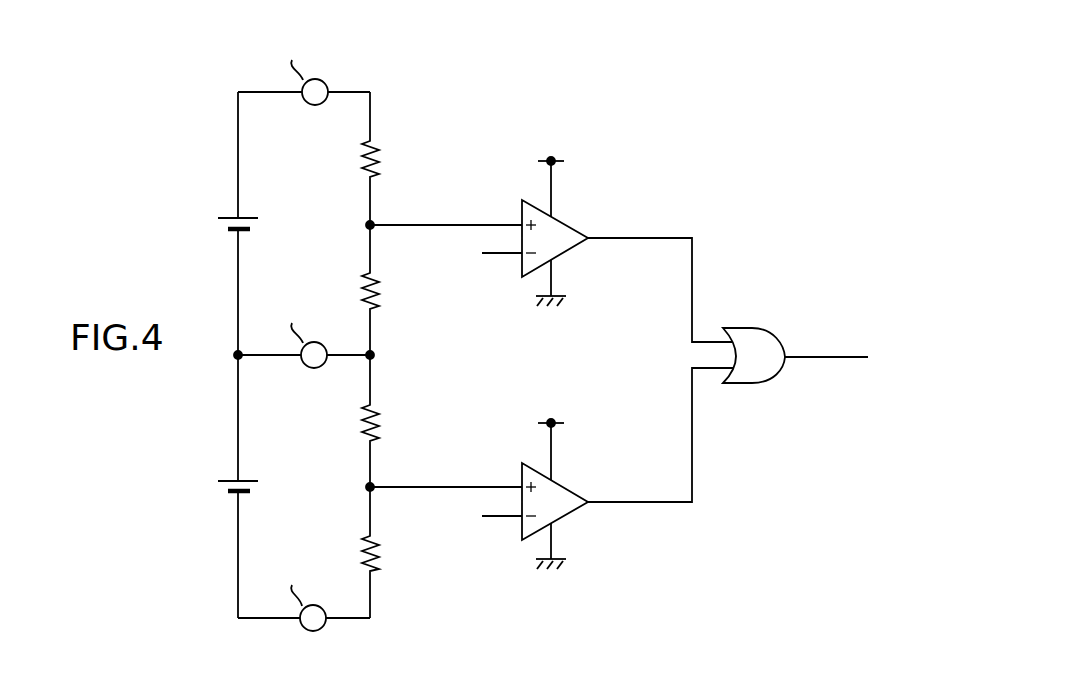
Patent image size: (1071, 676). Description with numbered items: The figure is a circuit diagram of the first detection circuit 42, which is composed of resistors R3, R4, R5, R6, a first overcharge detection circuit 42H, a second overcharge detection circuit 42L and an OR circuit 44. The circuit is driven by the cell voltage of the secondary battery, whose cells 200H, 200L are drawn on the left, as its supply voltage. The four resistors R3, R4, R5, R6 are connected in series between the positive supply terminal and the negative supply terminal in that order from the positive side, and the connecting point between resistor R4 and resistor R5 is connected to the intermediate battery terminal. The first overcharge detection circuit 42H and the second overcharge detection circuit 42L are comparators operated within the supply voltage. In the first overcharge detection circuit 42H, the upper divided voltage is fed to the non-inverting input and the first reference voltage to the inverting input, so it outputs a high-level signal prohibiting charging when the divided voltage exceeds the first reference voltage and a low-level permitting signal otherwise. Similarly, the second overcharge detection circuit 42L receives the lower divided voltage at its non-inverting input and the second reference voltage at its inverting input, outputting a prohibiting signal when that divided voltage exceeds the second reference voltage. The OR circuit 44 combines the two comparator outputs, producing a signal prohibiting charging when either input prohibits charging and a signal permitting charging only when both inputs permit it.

The first detection circuit 42 is at (188, 126).
The high-side battery 200H is at (241, 217).
The low-side battery 200L is at (241, 480).
The first overcharge detection circuit 42H is at (556, 217).
The second overcharge detection circuit 42L is at (556, 480).
The OR circuit 44 is at (741, 328).
The resistor R3 is at (387, 158).
The resistor R4 is at (387, 290).
The resistor R5 is at (387, 422).
The resistor R6 is at (387, 552).